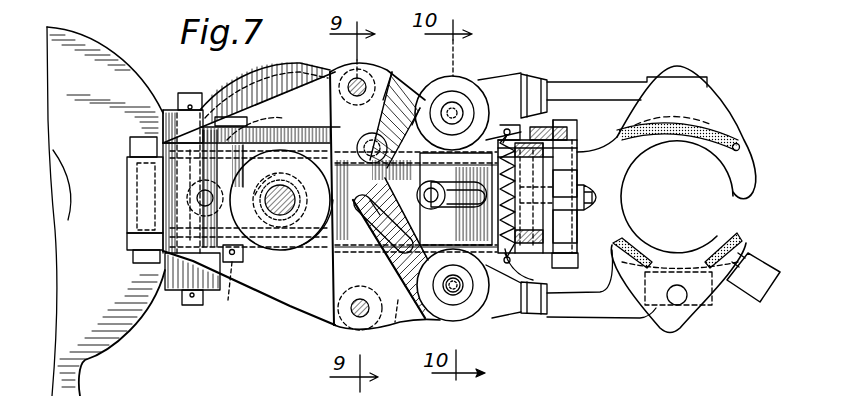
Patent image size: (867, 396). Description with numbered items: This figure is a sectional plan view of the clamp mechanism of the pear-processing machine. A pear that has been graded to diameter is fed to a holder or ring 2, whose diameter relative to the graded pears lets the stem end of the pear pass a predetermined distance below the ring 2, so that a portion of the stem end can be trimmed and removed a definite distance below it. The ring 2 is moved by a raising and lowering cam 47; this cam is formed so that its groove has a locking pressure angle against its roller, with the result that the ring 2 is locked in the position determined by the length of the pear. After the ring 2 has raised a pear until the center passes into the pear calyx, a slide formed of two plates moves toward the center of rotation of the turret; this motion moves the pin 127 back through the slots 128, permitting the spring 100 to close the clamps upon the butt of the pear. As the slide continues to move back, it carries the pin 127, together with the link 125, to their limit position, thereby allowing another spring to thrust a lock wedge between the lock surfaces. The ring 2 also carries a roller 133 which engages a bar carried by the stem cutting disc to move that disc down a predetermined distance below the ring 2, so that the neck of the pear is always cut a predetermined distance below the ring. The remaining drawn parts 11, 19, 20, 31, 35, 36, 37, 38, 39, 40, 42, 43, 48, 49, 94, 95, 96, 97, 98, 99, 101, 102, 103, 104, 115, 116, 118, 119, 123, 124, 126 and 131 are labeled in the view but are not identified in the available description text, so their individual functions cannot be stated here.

The holder or ring 2 is at (744, 182).
The direction of movement arrow 11 is at (744, 215).
The housing frame 19 is at (308, 305).
The pivot pin 20 is at (350, 320).
The body casing 31 is at (140, 88).
The spring housing 35 is at (530, 245).
The release button 36 is at (586, 207).
The cover plate 37 is at (570, 150).
The mounting flange 38 is at (130, 156).
The plate 39 is at (292, 140).
The lug 40 is at (193, 303).
The bracket 42 is at (130, 188).
The block 43 is at (147, 256).
The raising and lowering cam 47 is at (272, 70).
The shaft 48 is at (280, 215).
The stop pin 49 is at (240, 262).
The lower jaw pivot 94 is at (682, 303).
The lower arm 95 is at (617, 310).
The upper arm 96 is at (607, 88).
The friction pad 97 is at (715, 140).
The pin 98 is at (741, 147).
The friction pads 99 is at (735, 240).
The spring 100 is at (522, 305).
The lower roller 101 is at (466, 312).
The upper link 102 is at (490, 92).
The roller pin 103 is at (450, 302).
The upper roller 104 is at (455, 110).
The pin 115 is at (396, 310).
The spring anchor pin 116 is at (506, 128).
The lever arm 118 is at (396, 150).
The lever arm 119 is at (372, 150).
The spring 123 is at (230, 300).
The strut arm 124 is at (397, 236).
The link 125 is at (452, 117).
The plunger 126 is at (454, 191).
The pin 127 is at (298, 195).
The slots 128 is at (413, 196).
The bushing 131 is at (283, 178).
The roller 133 is at (780, 272).